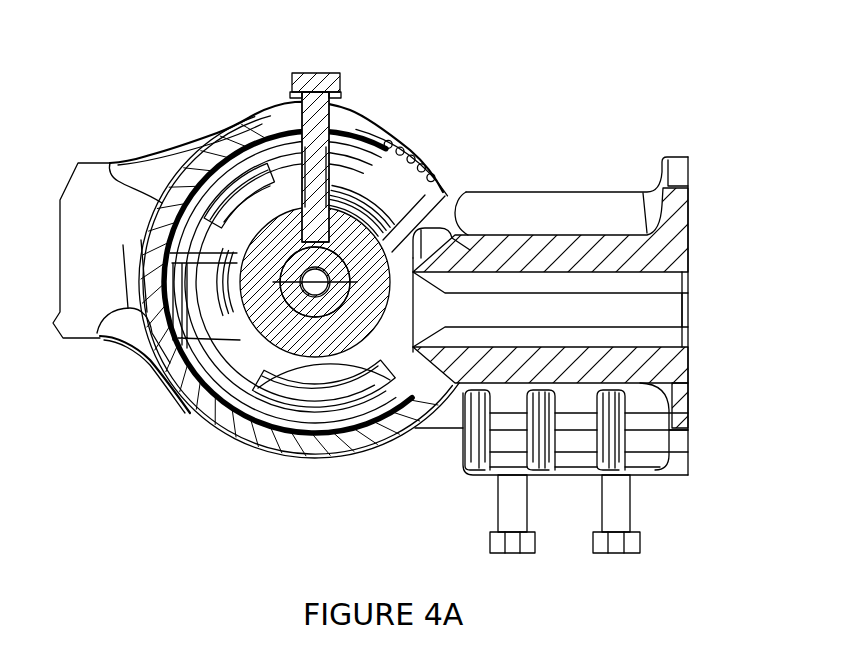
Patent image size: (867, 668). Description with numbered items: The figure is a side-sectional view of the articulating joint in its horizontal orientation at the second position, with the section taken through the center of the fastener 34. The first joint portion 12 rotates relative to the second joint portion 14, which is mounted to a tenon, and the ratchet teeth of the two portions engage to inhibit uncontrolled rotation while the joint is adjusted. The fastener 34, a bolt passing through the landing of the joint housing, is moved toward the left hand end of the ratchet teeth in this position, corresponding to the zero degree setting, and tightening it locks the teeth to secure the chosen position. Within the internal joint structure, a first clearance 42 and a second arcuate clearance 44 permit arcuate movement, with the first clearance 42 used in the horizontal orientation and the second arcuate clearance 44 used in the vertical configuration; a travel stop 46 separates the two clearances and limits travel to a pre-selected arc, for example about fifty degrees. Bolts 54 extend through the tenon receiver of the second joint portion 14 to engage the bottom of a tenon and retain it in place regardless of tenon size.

The first joint portion 12 is at (105, 150).
The second joint portion 14 is at (586, 174).
The fastener 34 is at (309, 74).
The first clearance 42 is at (378, 178).
The second arcuate clearance 44 is at (200, 352).
The travel stop 46 is at (248, 162).
The bolts 54 is at (508, 505).